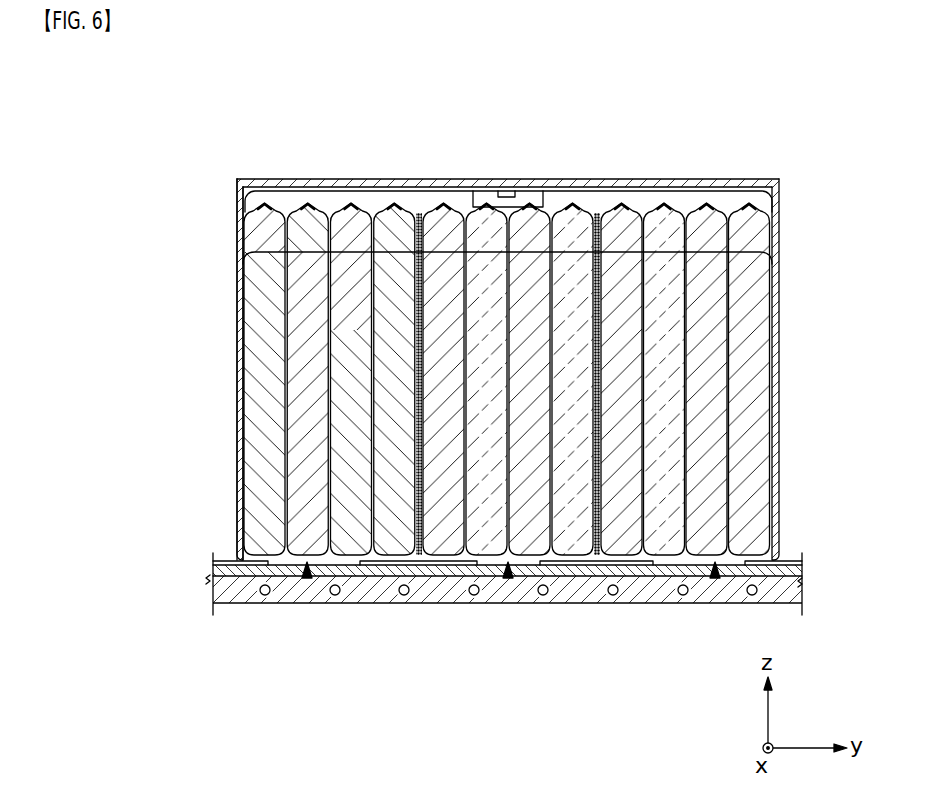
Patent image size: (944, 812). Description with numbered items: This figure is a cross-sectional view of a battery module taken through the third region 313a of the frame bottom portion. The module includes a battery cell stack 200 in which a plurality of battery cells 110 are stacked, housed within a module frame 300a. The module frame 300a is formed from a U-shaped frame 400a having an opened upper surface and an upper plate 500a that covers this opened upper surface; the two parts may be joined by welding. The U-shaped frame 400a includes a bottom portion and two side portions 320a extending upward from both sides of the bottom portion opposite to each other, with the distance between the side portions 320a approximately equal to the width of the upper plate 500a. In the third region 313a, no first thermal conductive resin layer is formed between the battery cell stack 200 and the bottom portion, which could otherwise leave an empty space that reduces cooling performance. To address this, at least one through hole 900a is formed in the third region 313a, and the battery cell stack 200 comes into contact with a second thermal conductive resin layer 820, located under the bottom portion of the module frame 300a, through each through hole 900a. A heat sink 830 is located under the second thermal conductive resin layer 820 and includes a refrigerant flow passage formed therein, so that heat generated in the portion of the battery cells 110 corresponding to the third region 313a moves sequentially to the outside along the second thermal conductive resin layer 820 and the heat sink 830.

The module frame 300a is at (293, 96).
The U-shaped frame 400a is at (236, 218).
The upper plate 500a is at (265, 180).
The battery cell stack 200 is at (588, 252).
The side portions 320a is at (240, 403).
The battery cells 110 is at (750, 404).
The third region 313a is at (273, 563).
The second thermal conductive resin layer 820 is at (375, 577).
The heat sink 830 is at (443, 592).
The through hole 900a is at (307, 578).